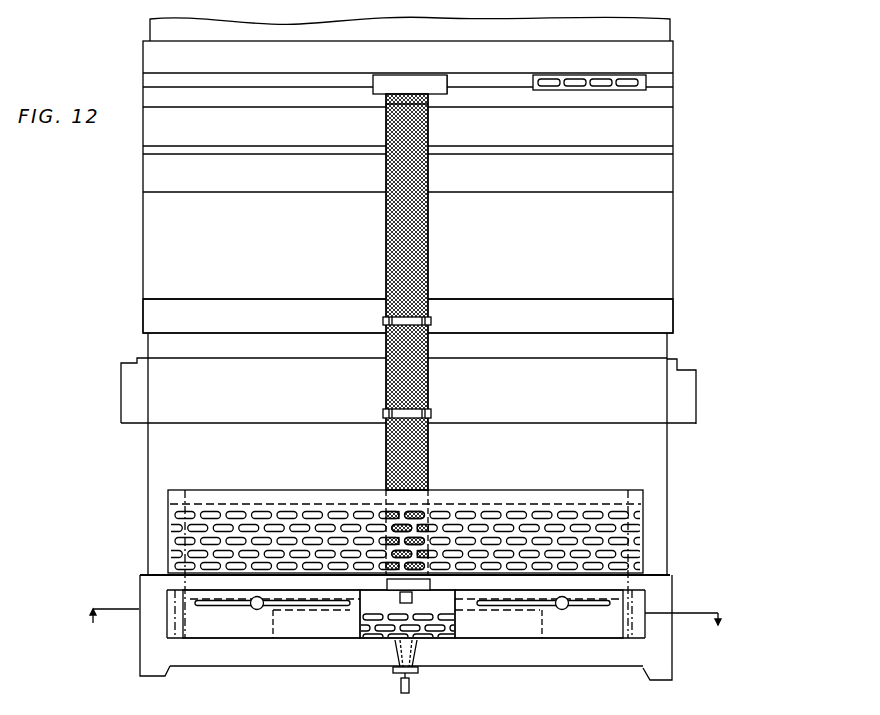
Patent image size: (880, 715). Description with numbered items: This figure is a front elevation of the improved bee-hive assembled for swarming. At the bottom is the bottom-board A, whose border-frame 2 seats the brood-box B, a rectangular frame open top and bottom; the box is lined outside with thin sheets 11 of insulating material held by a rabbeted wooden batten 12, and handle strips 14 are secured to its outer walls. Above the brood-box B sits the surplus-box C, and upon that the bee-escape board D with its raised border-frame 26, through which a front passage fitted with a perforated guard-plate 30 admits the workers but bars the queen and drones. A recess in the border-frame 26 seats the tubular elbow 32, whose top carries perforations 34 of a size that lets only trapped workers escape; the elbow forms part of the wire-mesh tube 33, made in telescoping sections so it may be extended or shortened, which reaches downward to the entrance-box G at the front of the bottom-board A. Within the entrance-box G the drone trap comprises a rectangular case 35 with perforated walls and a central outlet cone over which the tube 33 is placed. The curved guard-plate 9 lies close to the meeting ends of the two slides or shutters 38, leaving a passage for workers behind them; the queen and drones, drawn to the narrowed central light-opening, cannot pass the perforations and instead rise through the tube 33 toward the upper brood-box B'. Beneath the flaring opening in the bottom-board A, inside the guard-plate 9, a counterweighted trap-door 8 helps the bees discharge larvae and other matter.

The border-frame 2 is at (698, 637).
The trap-door 8 is at (409, 672).
The guard-plate 9 is at (382, 628).
The sheets of insulating material 11 is at (147, 455).
The batten 12 is at (708, 566).
The handle strips 14 is at (696, 398).
The border-frame 26 is at (142, 82).
The guard-plate 30 is at (596, 75).
The tubular elbow 32 is at (446, 80).
The wire-mesh tube 33 is at (386, 265).
The perforations 34 is at (383, 75).
The rectangular case 35 is at (574, 490).
The slides or shutters 38 is at (512, 634).
The bottom-board A is at (668, 660).
The brood-box B is at (439, 454).
The upper brood-box B' is at (441, 29).
The surplus-box C is at (673, 247).
The bee-escape board D is at (673, 90).
The entrance-box G is at (638, 598).